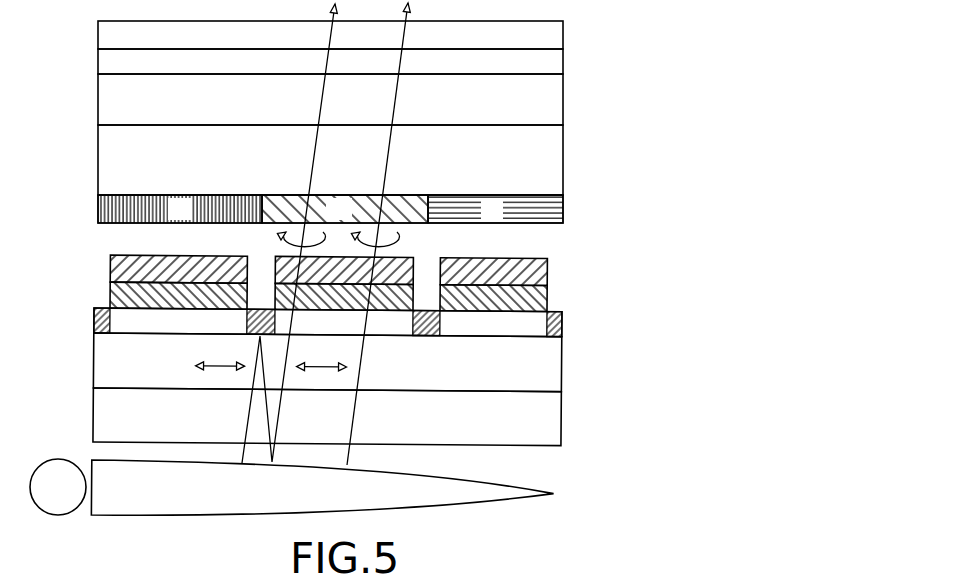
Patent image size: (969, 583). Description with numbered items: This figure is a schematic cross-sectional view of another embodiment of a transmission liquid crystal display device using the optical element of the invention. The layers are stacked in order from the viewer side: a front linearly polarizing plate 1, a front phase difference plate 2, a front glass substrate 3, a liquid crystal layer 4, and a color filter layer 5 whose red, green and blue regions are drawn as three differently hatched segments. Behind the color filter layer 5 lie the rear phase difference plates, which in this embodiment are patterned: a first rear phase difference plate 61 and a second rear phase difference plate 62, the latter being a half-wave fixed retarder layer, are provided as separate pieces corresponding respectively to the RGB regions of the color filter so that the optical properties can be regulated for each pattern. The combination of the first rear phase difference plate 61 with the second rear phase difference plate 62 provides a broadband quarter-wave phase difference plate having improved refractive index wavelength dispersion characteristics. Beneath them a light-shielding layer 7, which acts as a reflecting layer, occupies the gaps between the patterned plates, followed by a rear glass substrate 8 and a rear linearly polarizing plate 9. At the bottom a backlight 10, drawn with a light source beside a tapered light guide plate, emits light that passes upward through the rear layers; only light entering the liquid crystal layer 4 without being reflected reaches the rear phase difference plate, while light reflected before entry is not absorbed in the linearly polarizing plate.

The front linearly polarizing plate 1 is at (563, 41).
The front phase difference plate 2 is at (563, 68).
The front glass substrate 3 is at (563, 105).
The liquid crystal layer 4 is at (563, 163).
The color filter layer 5 is at (563, 208).
The first rear phase difference plate 61 is at (547, 270).
The second rear phase difference plate 62 is at (547, 297).
The light-shielding layer 7 is at (562, 318).
The rear glass substrate 8 is at (562, 358).
The rear linearly polarizing plate 9 is at (562, 410).
The backlight 10 is at (555, 490).